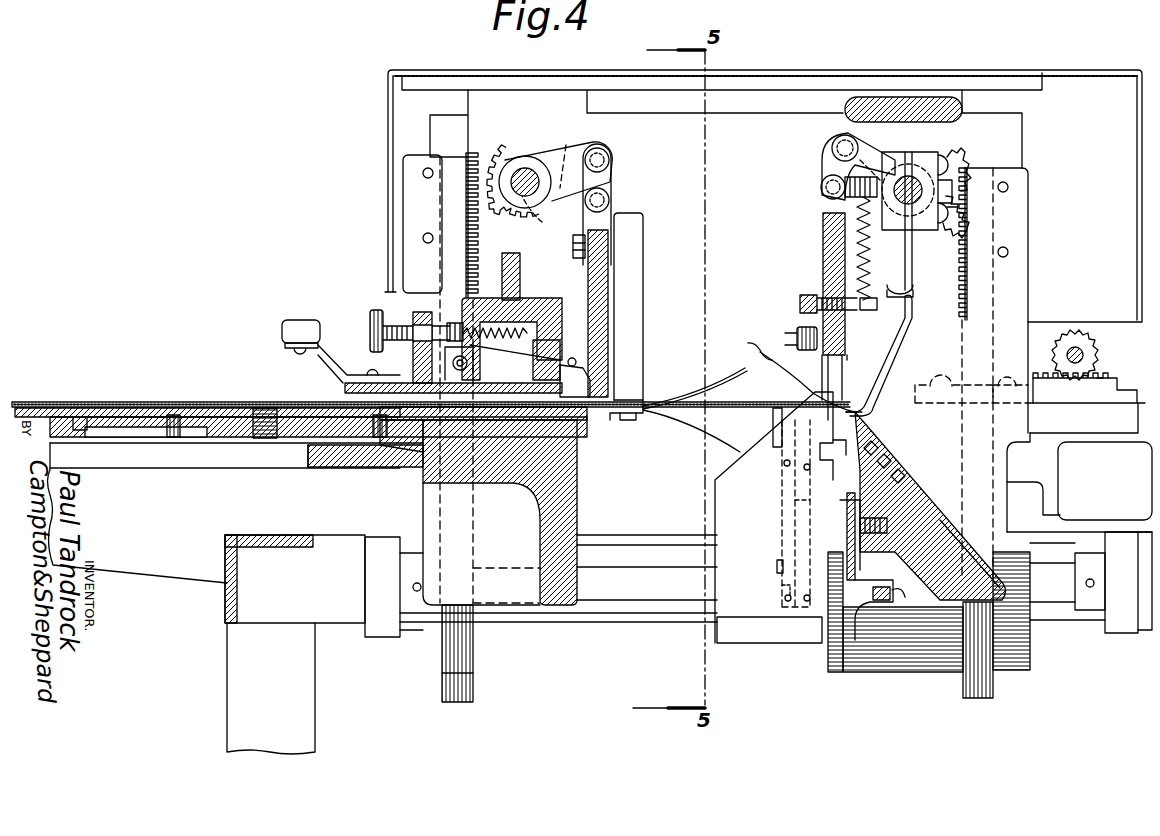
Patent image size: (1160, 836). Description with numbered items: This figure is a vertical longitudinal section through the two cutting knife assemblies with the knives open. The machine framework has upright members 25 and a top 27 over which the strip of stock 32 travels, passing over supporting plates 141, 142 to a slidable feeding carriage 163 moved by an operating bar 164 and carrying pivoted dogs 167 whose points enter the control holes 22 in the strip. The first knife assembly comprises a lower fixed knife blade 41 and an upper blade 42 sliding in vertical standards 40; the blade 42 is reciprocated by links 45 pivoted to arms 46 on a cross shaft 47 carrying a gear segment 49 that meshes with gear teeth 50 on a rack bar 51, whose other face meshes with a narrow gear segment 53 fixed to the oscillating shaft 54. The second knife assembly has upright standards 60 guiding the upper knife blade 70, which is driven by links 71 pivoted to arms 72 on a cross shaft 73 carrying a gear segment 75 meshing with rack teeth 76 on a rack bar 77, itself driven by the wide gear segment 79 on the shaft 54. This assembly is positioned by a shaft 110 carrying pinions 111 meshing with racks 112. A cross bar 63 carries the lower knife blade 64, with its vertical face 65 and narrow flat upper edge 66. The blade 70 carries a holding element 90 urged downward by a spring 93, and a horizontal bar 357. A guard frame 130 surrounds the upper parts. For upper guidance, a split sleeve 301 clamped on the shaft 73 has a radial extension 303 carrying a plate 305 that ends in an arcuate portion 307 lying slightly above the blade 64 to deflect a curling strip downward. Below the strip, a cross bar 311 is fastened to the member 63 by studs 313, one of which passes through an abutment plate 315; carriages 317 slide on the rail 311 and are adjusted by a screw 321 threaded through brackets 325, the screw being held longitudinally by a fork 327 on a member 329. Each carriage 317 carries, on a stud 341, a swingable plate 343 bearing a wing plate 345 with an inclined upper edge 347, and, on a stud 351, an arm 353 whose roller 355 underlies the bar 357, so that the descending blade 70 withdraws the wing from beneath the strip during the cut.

The guard frame 130 is at (1068, 70).
The vertical standards 40 is at (487, 193).
The gear segment 49 is at (484, 155).
The arms 46 is at (563, 152).
The links 45 is at (612, 180).
The cross shaft 47 is at (542, 214).
The gear teeth 50 is at (474, 268).
The upper blade 42 is at (615, 298).
The lower fixed knife blade 41 is at (623, 412).
The feeding carriage 163 is at (403, 380).
The operating bar 164 is at (300, 322).
The pivoted dogs 167 is at (585, 373).
The control holes 22 is at (312, 402).
The supporting plate 141 is at (78, 408).
The supporting plate 142 is at (265, 406).
The top 27 is at (172, 578).
The upright members 25 is at (312, 680).
The narrow gear segment 53 is at (470, 553).
The rack bar 51 is at (475, 694).
The shaft 54 is at (626, 600).
The arm 353 is at (743, 372).
The strip of stock 32 is at (690, 410).
The arcuate portion 307 is at (756, 342).
The horizontal bar 357 is at (800, 296).
The roller 355 is at (798, 308).
The holding element 90 is at (848, 360).
The stud 351 is at (772, 418).
The inclined upper edge 347 is at (737, 462).
The wing plate 345 is at (769, 497).
The cross bar 311 is at (845, 510).
The plate 343 is at (780, 520).
The studs 313 is at (858, 530).
The stud 341 is at (777, 563).
The carriages 317 is at (782, 588).
The cross bar 63 is at (920, 505).
The lower knife blade 64 is at (872, 447).
The vertical face 65 is at (850, 455).
The upper edge 66 is at (866, 414).
The member 329 is at (947, 527).
The plate 305 is at (898, 362).
The upper knife blade 70 is at (826, 258).
The links 71 is at (830, 172).
The arms 72 is at (876, 150).
The spring 93 is at (850, 208).
The cross shaft 73 is at (918, 165).
The split sleeve 301 is at (947, 207).
The gear segment 75 is at (946, 235).
The rack teeth 76 is at (915, 298).
The radial extension 303 is at (906, 298).
The upright standards 60 is at (1020, 320).
The rack bar 77 is at (960, 430).
The shaft 110 is at (1088, 352).
The pinions 111 is at (1097, 368).
The racks 112 is at (1045, 375).
The wide gear segment 79 is at (1022, 665).
The abutment plate 315 is at (828, 648).
The adjusting screw 321 is at (885, 602).
The fork 327 is at (868, 606).
The brackets 325 is at (903, 598).